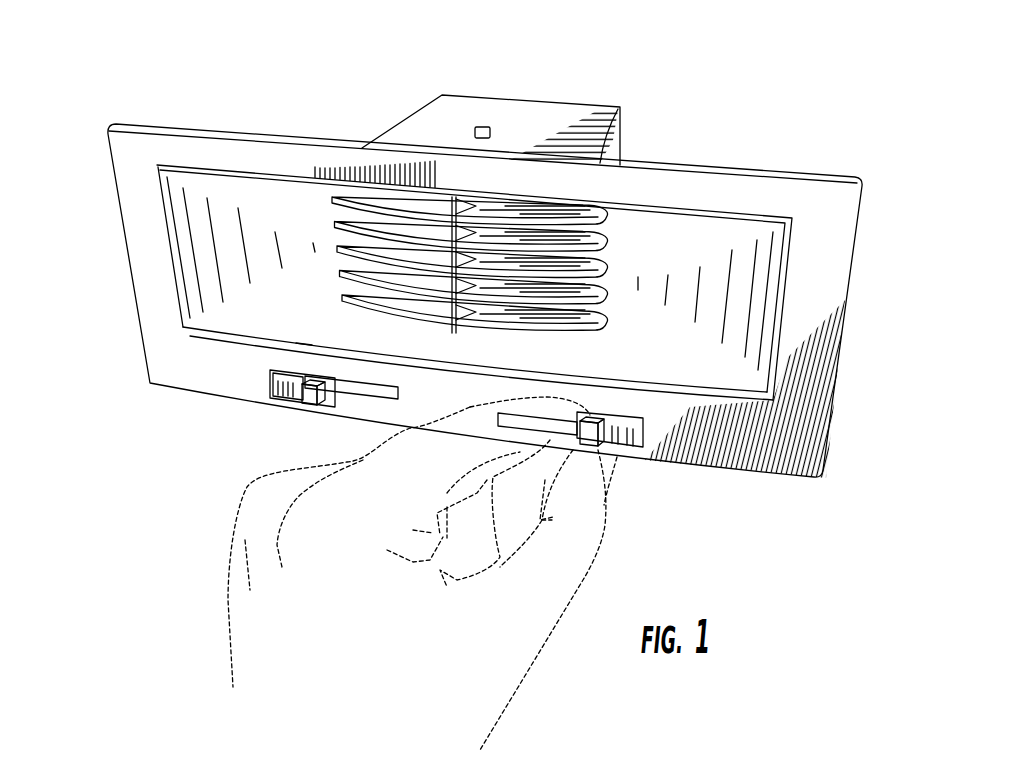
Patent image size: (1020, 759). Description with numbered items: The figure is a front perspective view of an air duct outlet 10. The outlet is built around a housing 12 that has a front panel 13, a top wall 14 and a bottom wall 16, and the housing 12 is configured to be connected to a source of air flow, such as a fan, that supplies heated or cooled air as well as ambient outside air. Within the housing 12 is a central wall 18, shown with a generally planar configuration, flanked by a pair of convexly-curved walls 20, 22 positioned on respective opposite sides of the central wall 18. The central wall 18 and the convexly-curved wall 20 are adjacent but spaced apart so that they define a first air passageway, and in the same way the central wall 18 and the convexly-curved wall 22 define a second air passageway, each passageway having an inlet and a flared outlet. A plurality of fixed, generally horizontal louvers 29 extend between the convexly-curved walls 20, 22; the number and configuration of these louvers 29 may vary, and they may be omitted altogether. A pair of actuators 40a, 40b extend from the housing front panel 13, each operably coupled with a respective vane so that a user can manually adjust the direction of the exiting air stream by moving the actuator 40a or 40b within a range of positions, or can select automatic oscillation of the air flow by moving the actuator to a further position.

The air duct outlet 10 is at (684, 115).
The housing 12 is at (552, 96).
The front panel 13 is at (823, 257).
The top wall 14 is at (463, 105).
The bottom wall 16 is at (303, 345).
The central wall 18 is at (453, 230).
The convexly-curved wall 20 is at (700, 363).
The convexly-curved wall 22 is at (232, 272).
The louvers 29 is at (478, 366).
The actuator 40a is at (623, 447).
The actuator 40b is at (310, 408).